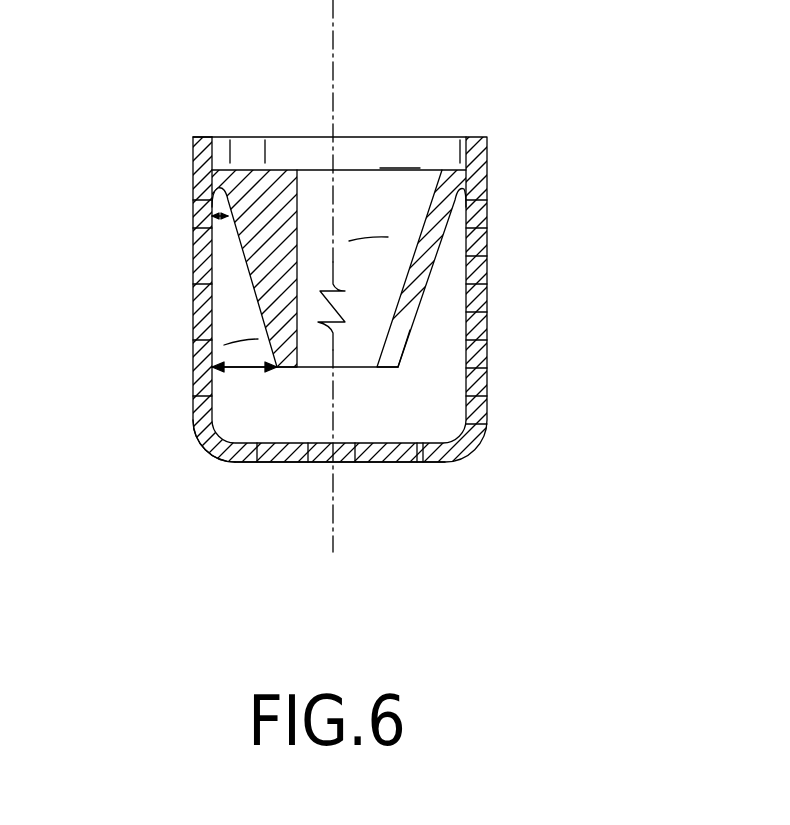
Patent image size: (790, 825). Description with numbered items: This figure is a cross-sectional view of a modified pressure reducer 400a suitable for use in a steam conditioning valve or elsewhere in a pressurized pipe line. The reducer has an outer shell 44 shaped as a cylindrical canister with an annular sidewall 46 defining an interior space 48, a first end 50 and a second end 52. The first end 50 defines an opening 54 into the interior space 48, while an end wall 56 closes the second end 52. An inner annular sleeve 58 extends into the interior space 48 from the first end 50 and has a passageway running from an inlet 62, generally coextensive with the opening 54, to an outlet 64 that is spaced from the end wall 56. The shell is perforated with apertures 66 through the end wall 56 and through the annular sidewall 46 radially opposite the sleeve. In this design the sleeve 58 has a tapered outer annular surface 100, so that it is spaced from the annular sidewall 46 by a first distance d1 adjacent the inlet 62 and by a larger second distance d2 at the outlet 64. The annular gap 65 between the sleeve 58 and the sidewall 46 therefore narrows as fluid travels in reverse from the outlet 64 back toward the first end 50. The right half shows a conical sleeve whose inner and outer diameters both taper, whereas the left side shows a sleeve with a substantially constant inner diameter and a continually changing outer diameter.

The closure assembly 400a is at (537, 184).
The outer shell 44 is at (490, 149).
The annular sidewall 46 is at (488, 356).
The interior space 48 is at (400, 368).
The first end 50 is at (193, 150).
The second end 52 is at (196, 437).
The opening 54 is at (280, 140).
The end wall 56 is at (392, 465).
The inner annular sleeve 58 is at (422, 263).
The inlet 62 is at (395, 168).
The outlet 64 is at (365, 368).
The annular gap 65 is at (243, 323).
The apertures 66 is at (197, 333).
The tapered outer annular surface 100 is at (422, 293).
The first distance d1 is at (220, 218).
The second distance d2 is at (226, 372).